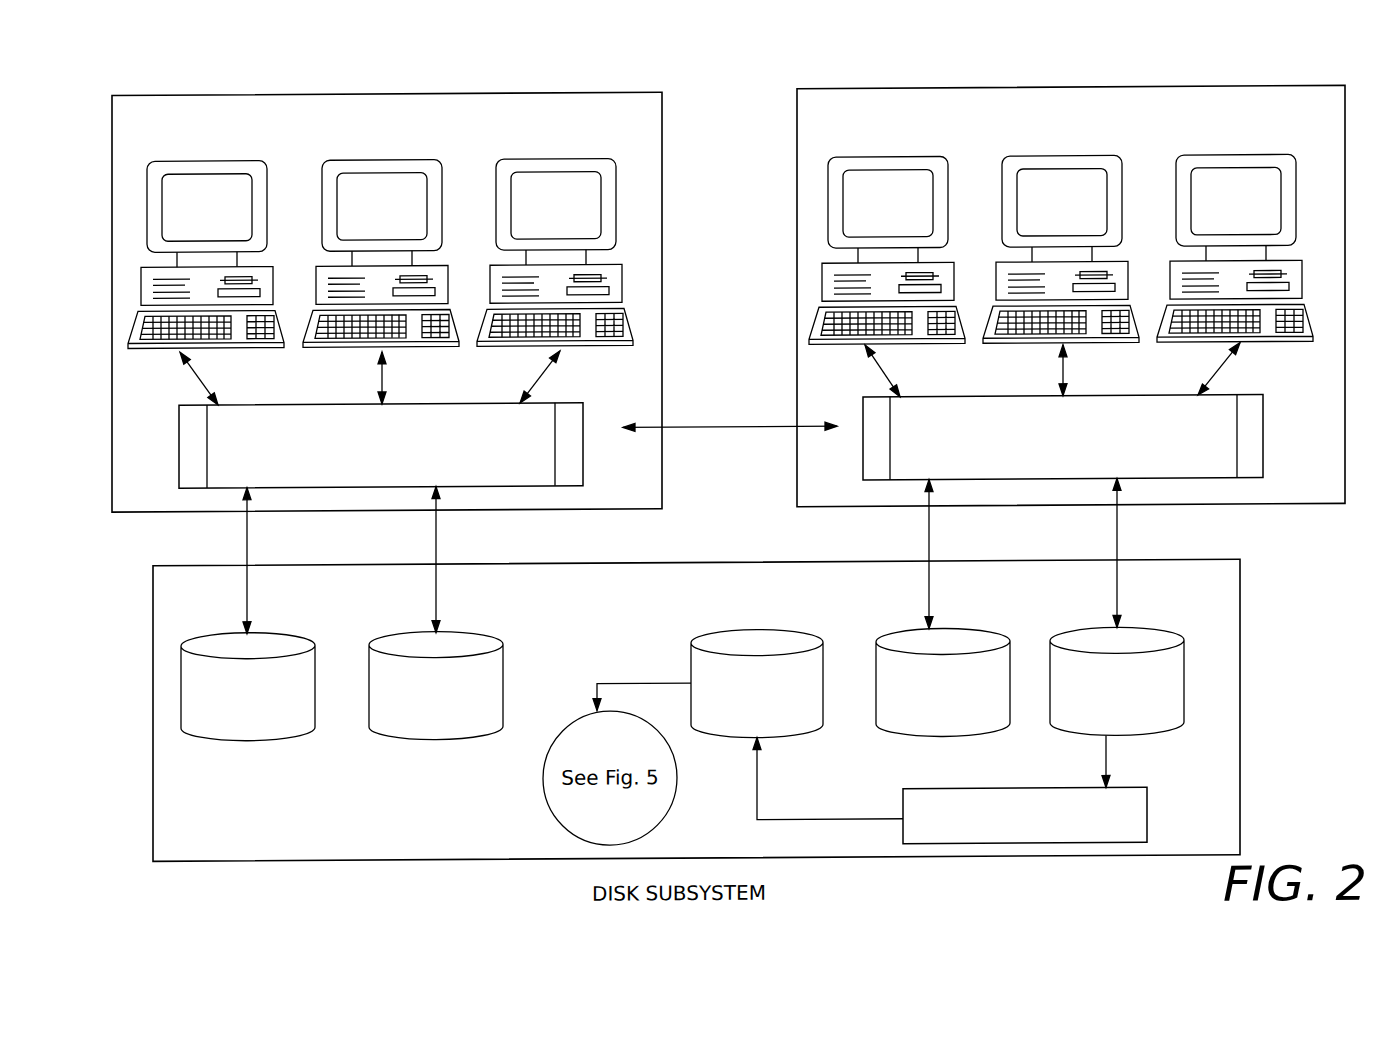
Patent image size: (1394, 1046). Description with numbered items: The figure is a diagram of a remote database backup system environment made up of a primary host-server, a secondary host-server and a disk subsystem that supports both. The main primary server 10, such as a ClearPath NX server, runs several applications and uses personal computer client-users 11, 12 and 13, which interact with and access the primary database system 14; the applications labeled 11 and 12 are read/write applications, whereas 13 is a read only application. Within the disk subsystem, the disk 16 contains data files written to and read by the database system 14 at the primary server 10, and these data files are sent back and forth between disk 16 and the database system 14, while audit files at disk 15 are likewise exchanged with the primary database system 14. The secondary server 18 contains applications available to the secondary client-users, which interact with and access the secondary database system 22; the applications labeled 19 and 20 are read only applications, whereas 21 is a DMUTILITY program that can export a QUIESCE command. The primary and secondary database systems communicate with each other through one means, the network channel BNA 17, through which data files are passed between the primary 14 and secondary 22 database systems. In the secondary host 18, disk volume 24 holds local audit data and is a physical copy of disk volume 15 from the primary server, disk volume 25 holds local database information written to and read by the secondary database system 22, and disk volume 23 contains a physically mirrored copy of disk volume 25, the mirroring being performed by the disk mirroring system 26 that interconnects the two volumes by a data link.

The primary server 10 is at (515, 92).
The personal computer client-user 11 is at (258, 186).
The personal computer client-user 12 is at (436, 186).
The personal computer client-user 13 is at (611, 171).
The primary database system 14 is at (462, 402).
The audit file disk 15 is at (273, 632).
The data file disk 16 is at (462, 631).
The BNA network channel 17 is at (688, 427).
The secondary server 18 is at (1235, 89).
The read only application 19 is at (903, 156).
The read only application 20 is at (1118, 182).
The DMUTILITY program 21 is at (1236, 156).
The secondary database system 22 is at (1263, 422).
The target disk volume 23 is at (797, 631).
The local audit data disk volume 24 is at (969, 630).
The local database information disk volume 25 is at (1143, 629).
The disk mirroring system 26 is at (1147, 815).